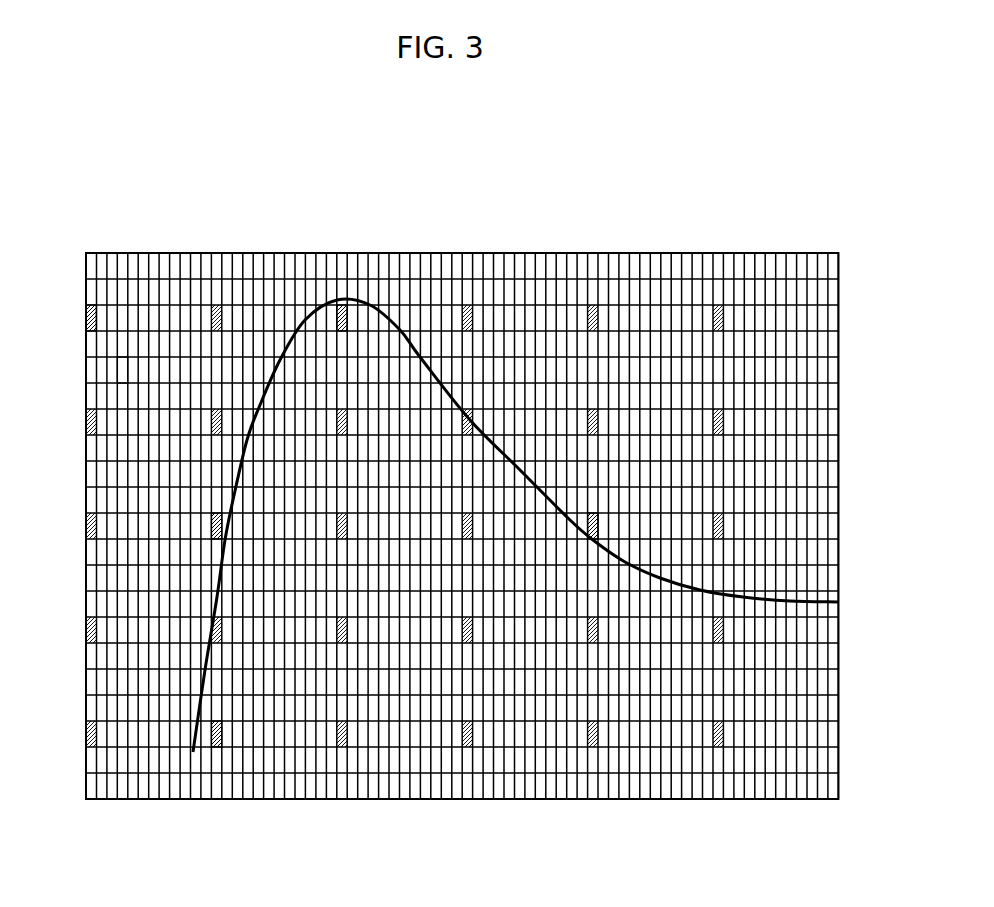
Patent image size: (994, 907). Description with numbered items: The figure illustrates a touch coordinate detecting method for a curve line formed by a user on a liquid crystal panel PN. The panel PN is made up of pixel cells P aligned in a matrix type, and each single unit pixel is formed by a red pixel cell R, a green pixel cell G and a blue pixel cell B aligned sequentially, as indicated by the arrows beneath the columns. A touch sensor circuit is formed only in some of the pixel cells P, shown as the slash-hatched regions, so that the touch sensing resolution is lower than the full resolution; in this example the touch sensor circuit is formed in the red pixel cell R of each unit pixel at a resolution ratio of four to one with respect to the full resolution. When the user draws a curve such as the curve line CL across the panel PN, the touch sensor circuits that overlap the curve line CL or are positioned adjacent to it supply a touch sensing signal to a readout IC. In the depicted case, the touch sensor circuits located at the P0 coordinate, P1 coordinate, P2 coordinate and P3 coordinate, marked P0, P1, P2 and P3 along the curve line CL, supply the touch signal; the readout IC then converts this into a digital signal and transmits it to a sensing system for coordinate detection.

The liquid crystal panel PN is at (838, 262).
The pixel cells P is at (88, 318).
The curve line CL is at (830, 600).
The P0 coordinate P0 is at (224, 735).
The P1 coordinate P1 is at (218, 525).
The P2 coordinate P2 is at (342, 326).
The P3 coordinate P3 is at (598, 523).
The red pixel cell R is at (690, 801).
The green pixel cell G is at (700, 801).
The blue pixel cell B is at (711, 801).